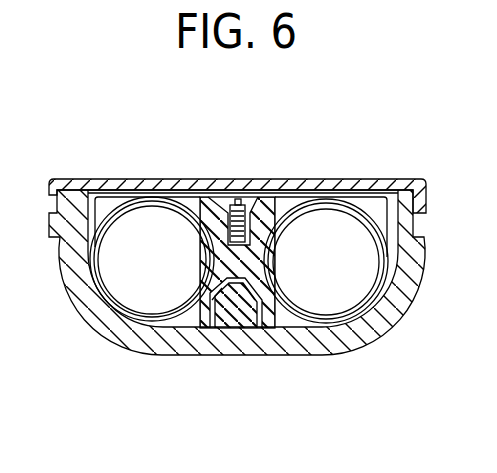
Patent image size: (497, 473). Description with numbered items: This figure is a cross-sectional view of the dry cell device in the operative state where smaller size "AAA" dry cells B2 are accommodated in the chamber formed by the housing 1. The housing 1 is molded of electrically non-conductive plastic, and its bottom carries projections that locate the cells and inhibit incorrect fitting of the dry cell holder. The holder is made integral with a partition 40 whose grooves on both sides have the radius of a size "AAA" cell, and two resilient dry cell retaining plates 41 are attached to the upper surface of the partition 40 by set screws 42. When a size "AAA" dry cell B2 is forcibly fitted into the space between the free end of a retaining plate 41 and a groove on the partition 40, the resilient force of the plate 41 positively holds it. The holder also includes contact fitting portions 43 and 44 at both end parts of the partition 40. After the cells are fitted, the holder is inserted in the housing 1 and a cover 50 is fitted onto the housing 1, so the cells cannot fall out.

The housing 1 is at (397, 332).
The partition 40 is at (265, 208).
The dry cell retaining plates 41 is at (172, 197).
The set screws 42 is at (226, 201).
The contact fitting portion 43 is at (223, 193).
The contact fitting portion 44 is at (104, 200).
The cover 50 is at (401, 186).
The size "AAA" dry cell B2 is at (130, 298).